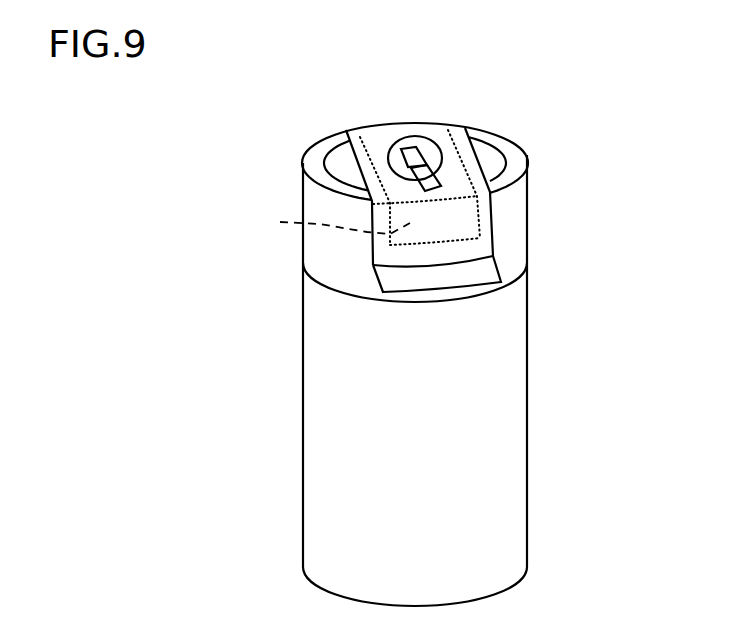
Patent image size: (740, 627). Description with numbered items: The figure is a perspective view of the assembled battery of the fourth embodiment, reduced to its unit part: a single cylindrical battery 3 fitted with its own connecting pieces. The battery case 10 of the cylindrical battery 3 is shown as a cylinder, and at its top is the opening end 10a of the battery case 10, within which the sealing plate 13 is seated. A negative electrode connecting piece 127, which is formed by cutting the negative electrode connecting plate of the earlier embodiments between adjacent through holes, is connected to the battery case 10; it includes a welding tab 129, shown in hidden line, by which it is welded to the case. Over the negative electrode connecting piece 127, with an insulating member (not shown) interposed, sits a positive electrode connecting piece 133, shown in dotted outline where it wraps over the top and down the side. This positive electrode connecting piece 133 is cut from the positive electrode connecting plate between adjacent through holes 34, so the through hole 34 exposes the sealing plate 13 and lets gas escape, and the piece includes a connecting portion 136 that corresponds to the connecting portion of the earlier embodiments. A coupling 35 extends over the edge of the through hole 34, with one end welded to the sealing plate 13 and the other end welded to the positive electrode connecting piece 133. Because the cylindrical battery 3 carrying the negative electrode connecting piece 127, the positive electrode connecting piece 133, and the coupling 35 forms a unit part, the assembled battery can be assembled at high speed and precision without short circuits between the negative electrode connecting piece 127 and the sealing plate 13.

The cylindrical battery 3 is at (528, 415).
The battery case 10 is at (528, 347).
The opening end 10a is at (513, 157).
The sealing plate 13 is at (426, 150).
The through hole 34 is at (407, 137).
The coupling 35 is at (423, 178).
The negative electrode connecting piece 127 is at (345, 131).
The welding tab 129 is at (320, 224).
The positive electrode connecting piece 133 is at (495, 230).
The connecting portion 136 is at (478, 272).